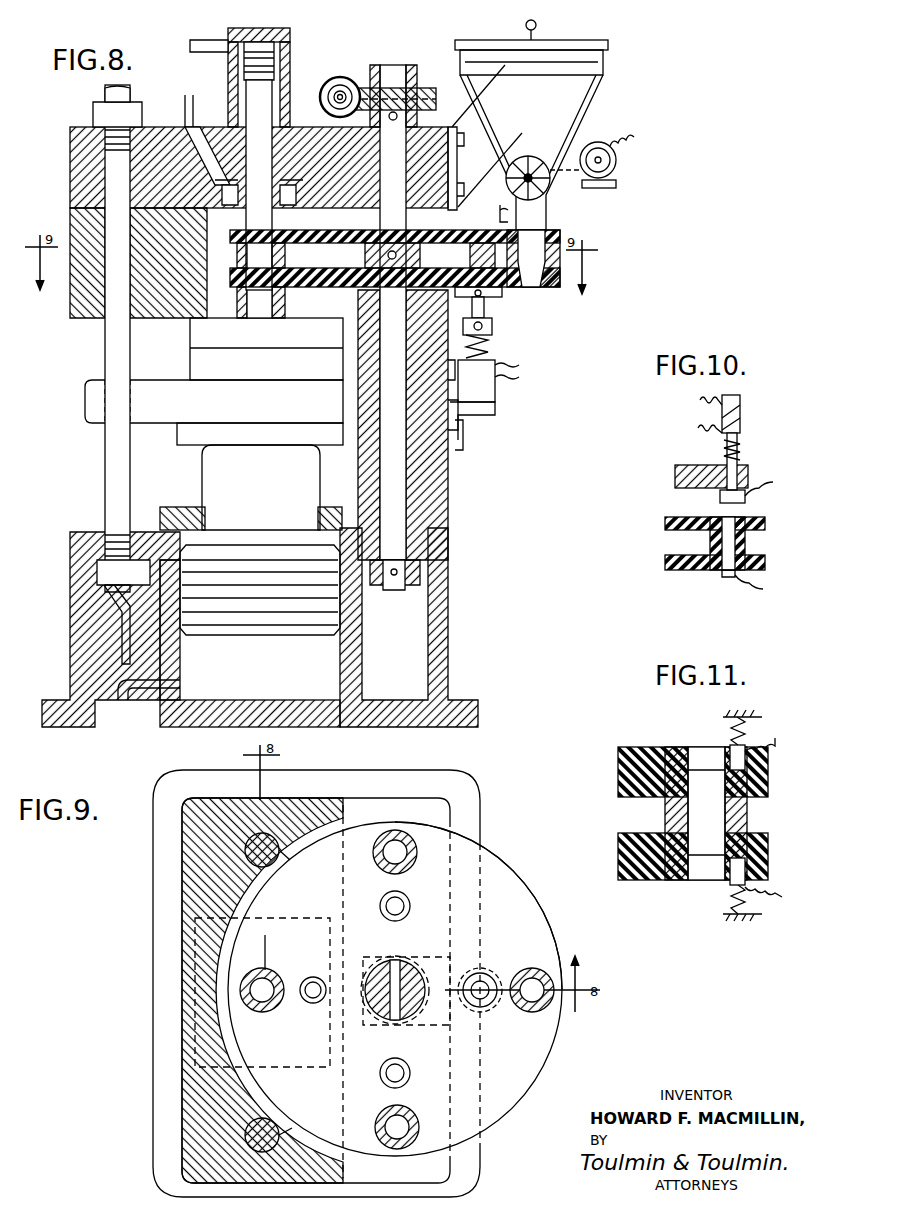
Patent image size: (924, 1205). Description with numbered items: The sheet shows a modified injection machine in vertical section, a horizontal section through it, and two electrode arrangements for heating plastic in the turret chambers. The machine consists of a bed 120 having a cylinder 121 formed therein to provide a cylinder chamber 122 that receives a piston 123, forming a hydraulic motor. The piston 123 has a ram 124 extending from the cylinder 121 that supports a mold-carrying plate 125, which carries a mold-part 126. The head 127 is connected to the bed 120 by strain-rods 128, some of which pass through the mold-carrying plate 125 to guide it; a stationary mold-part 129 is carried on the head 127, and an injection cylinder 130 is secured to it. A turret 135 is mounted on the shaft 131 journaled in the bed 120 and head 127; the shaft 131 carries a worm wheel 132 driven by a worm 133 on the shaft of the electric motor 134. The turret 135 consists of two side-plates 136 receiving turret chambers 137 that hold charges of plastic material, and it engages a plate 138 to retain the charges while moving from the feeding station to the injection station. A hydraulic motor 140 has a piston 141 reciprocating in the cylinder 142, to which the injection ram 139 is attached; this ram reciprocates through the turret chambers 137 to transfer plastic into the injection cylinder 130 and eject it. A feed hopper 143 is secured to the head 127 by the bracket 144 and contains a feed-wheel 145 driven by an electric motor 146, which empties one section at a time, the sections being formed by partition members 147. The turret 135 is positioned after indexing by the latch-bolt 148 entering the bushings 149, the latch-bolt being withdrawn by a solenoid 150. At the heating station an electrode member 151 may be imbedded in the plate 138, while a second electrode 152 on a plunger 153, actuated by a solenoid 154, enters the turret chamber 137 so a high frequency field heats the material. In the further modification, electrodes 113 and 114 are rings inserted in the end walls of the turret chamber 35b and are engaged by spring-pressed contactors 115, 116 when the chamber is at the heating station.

In FIG. 8, the bed 120 is at (70, 582).
In FIG. 9, the bed 120 is at (156, 975).
In FIG. 8, the cylinder 121 is at (362, 646).
In FIG. 8, the cylinder chamber 122 is at (180, 656).
In FIG. 8, the piston 123 is at (300, 636).
In FIG. 8, the ram 124 is at (202, 482).
In FIG. 8, the mold-carrying plate 125 is at (172, 395).
In FIG. 8, the mold-part 126 is at (280, 376).
In FIG. 8, the head 127 is at (70, 157).
In FIG. 8, the strain-rods 128 is at (105, 464).
In FIG. 9, the strain-rods 128 is at (270, 862).
In FIG. 8, the stationary mold-part 129 is at (312, 344).
In FIG. 8, the injection cylinder 130 is at (260, 310).
In FIG. 8, the shaft 131 is at (404, 459).
In FIG. 9, the shaft 131 is at (410, 975).
In FIG. 8, the worm wheel 132 is at (420, 100).
In FIG. 8, the worm 133 is at (340, 81).
In FIG. 8, the electric motor 134 is at (350, 80).
In FIG. 8, the turret 135 is at (480, 230).
In FIG. 9, the turret 135 is at (516, 870).
In FIG. 8, the side-plates 136 is at (548, 233).
In FIG. 9, the side-plates 136 is at (522, 905).
In FIG. 8, the turret chambers 137 is at (560, 242).
In FIG. 10, the turret chambers 137 is at (752, 548).
In FIG. 8, the plate 138 is at (500, 290).
In FIG. 8, the injection ram 139 is at (270, 146).
In FIG. 8, the hydraulic motor 140 is at (290, 38).
In FIG. 8, the piston 141 is at (244, 69).
In FIG. 8, the cylinder 142 is at (289, 92).
In FIG. 8, the feed hopper 143 is at (495, 55).
In FIG. 8, the bracket 144 is at (494, 162).
In FIG. 8, the feed-wheel 145 is at (548, 190).
In FIG. 8, the electric motor 146 is at (612, 164).
In FIG. 8, the partition members 147 is at (499, 214).
In FIG. 8, the latch-bolt 148 is at (490, 325).
In FIG. 9, the latch-bolt 148 is at (313, 977).
In FIG. 8, the bushings 149 is at (334, 262).
In FIG. 9, the bushings 149 is at (403, 903).
In FIG. 8, the solenoid 150 is at (497, 392).
In FIG. 10, the electrode member 151 is at (760, 580).
In FIG. 10, the second electrode 152 is at (746, 498).
In FIG. 10, the plunger 153 is at (740, 466).
In FIG. 10, the solenoid 154 is at (742, 405).
In FIG. 11, the electrode 113 is at (712, 755).
In FIG. 11, the electrode 114 is at (690, 878).
In FIG. 11, the spring-pressed contactor 115 is at (768, 758).
In FIG. 11, the spring-pressed contactor 116 is at (768, 866).
In FIG. 11, the turret chamber 35b is at (748, 810).